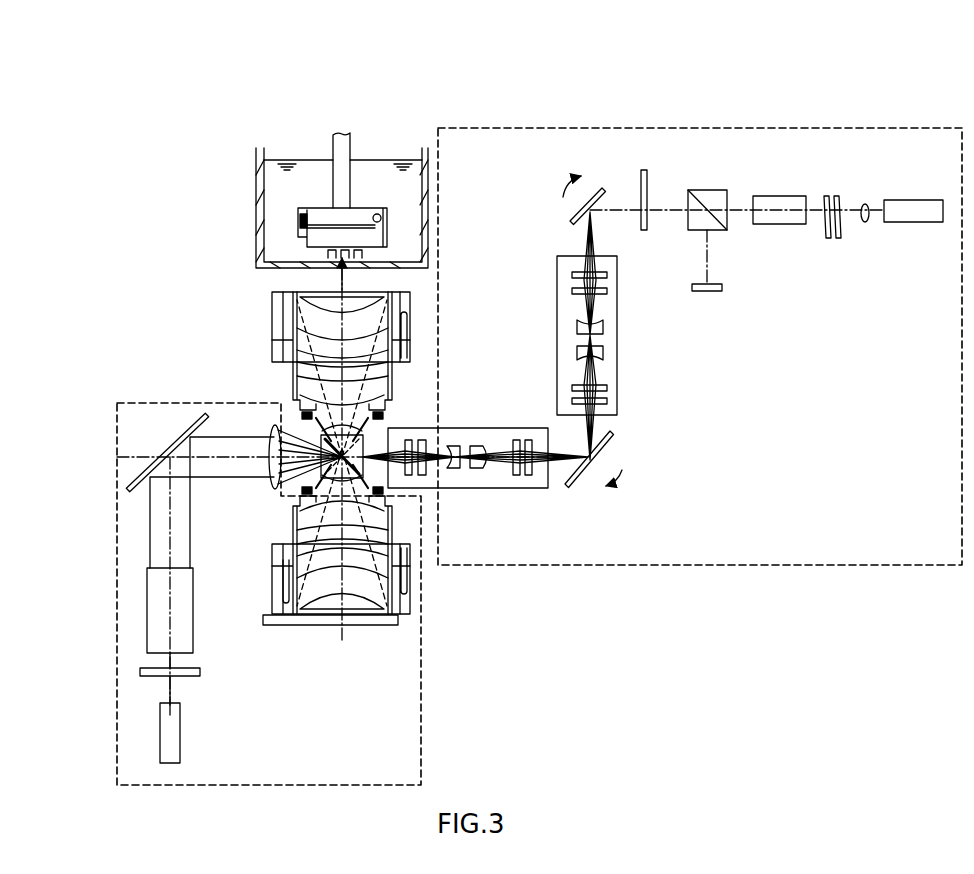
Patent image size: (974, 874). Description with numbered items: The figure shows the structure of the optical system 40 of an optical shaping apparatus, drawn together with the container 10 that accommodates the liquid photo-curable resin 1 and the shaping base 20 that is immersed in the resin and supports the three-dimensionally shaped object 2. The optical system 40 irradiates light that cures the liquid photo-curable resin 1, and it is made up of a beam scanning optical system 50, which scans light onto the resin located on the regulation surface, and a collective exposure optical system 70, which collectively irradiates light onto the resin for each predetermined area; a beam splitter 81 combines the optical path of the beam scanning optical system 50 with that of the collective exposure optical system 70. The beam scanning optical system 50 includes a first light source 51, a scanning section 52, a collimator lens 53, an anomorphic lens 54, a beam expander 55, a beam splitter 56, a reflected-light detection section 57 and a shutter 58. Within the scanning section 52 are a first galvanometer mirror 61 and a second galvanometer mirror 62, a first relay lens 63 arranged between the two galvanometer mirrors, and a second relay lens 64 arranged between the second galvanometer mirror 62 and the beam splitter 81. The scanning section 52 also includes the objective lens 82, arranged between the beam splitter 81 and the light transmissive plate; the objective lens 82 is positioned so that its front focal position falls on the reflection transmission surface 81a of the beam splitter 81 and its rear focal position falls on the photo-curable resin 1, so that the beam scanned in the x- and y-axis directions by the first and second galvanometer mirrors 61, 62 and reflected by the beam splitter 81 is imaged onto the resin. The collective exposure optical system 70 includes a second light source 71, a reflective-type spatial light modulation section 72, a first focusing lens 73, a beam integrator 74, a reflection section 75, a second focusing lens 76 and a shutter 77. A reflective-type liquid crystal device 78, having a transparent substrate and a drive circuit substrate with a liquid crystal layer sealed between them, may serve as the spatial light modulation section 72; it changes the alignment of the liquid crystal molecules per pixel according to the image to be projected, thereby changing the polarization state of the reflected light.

The liquid photo-curable resin 1 is at (300, 170).
The three-dimensionally shaped object 2 is at (352, 258).
The container 10 is at (259, 147).
The shaping base 20 is at (364, 208).
The optical system 40 is at (657, 68).
The beam scanning optical system 50 is at (872, 128).
The first light source 51 is at (918, 200).
The scanning section 52 is at (678, 398).
The collimator lens 53 is at (865, 204).
The anomorphic lens 54 is at (832, 195).
The beam expander 55 is at (780, 196).
The beam splitter 56 is at (708, 190).
The reflected-light detection section 57 is at (722, 288).
The shutter 58 is at (641, 186).
The first galvanometer mirror 61 is at (572, 215).
The second galvanometer mirror 62 is at (586, 490).
The first relay lens 63 is at (557, 340).
The second relay lens 64 is at (490, 428).
The collective exposure optical system 70 is at (421, 740).
The second light source 71 is at (180, 735).
The reflective-type spatial light modulation section 72 is at (350, 640).
The first focusing lens 73 is at (270, 490).
The beam integrator 74 is at (193, 620).
The reflection section 75 is at (172, 450).
The second focusing lens 76 is at (290, 575).
The shutter 77 is at (200, 672).
The reflective-type liquid crystal device 78 is at (268, 615).
The beam splitter 81 is at (363, 445).
The reflection transmission surface 81a is at (322, 448).
The objective lens 82 is at (259, 352).